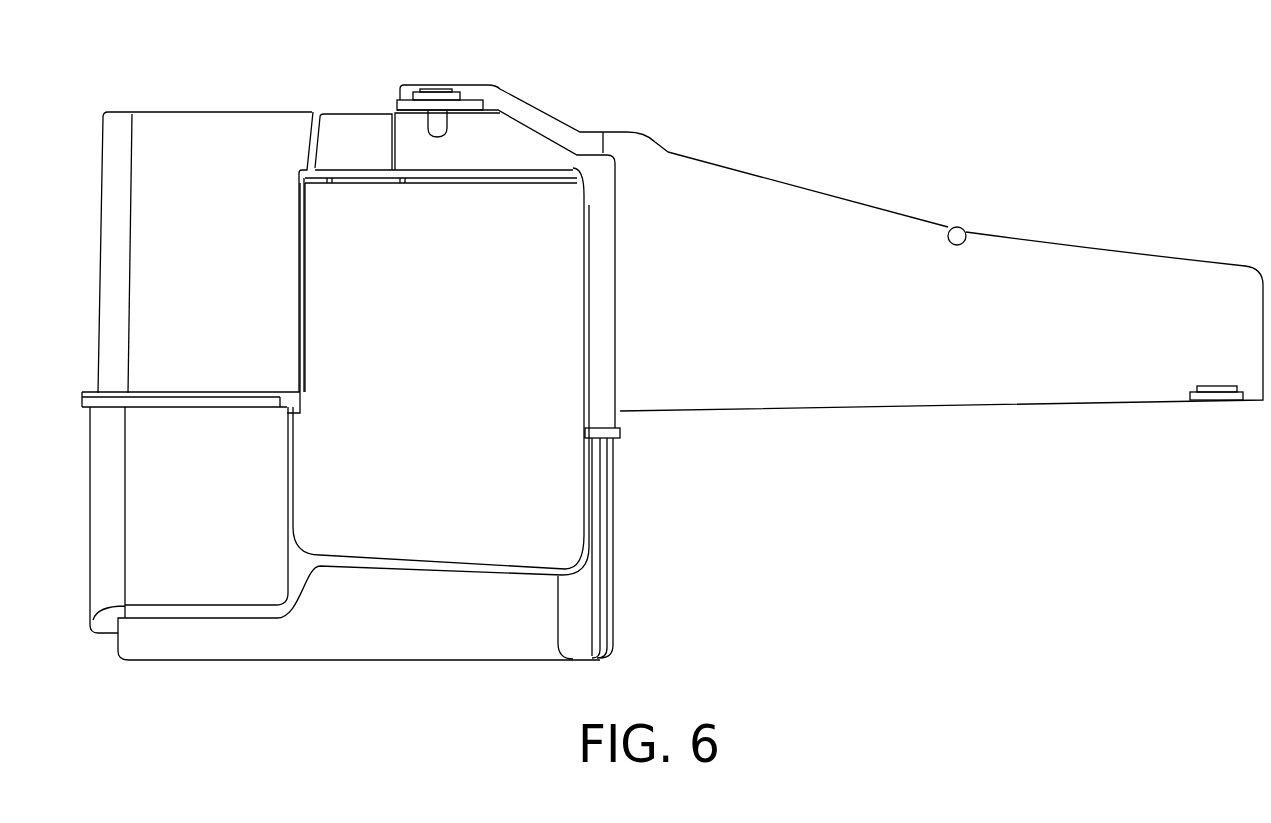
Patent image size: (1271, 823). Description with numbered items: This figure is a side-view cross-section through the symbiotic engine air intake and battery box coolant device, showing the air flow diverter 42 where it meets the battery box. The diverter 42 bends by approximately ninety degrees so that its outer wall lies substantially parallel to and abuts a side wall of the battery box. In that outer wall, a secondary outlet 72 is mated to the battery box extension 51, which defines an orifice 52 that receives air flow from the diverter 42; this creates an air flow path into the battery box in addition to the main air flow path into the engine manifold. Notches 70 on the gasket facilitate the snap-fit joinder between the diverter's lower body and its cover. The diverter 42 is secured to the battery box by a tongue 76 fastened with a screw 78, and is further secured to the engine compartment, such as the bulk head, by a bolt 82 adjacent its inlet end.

The air flow diverter 42 is at (1018, 242).
The extension 51 is at (382, 563).
The orifice 52 is at (580, 250).
The notches 70 is at (614, 188).
The secondary outlet 72 is at (622, 289).
The tongue 76 is at (537, 113).
The screw 78 is at (437, 103).
The bolt 82 is at (1217, 398).